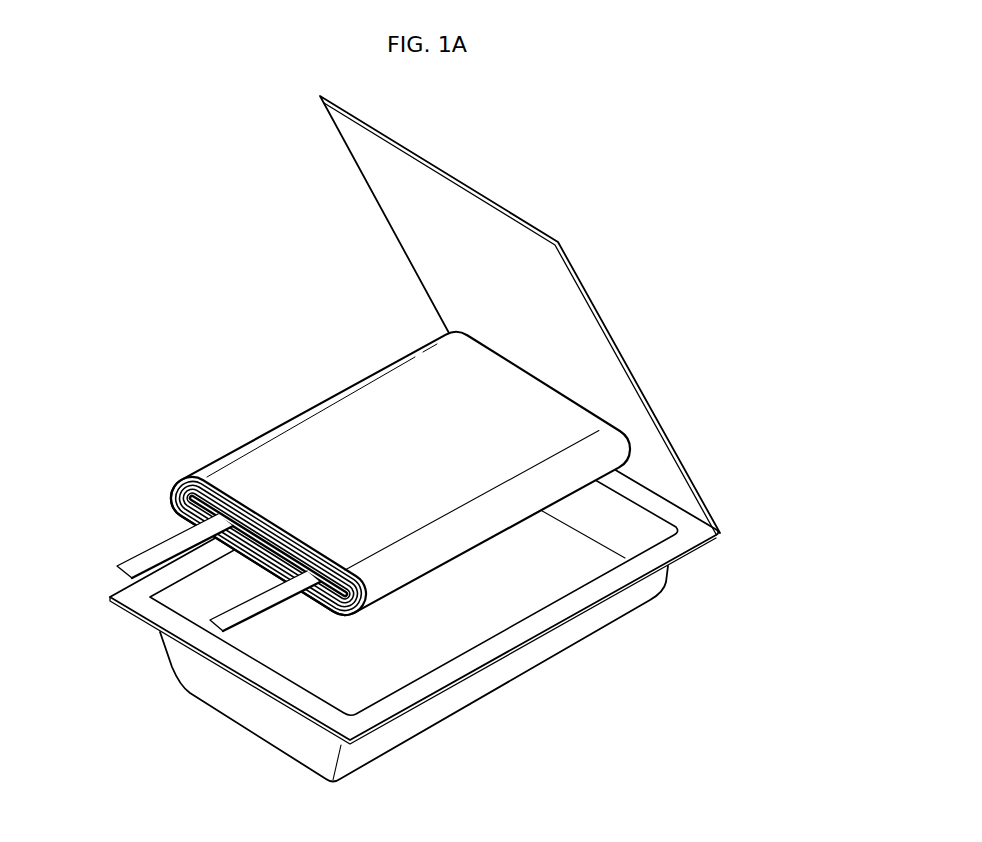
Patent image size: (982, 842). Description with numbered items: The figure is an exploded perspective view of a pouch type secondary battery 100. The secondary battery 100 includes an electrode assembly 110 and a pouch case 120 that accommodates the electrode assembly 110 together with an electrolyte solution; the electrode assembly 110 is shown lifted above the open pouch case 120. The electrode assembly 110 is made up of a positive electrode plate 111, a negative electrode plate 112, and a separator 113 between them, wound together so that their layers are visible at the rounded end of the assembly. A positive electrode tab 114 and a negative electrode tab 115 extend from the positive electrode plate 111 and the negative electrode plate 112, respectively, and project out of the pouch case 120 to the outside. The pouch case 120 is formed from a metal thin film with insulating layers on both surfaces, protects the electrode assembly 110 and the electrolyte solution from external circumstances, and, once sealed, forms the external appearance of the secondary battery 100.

The secondary battery 100 is at (432, 439).
The electrode assembly 110 is at (361, 528).
The positive electrode plate 111 is at (180, 476).
The negative electrode plate 112 is at (170, 499).
The separator 113 is at (173, 485).
The positive electrode tab 114 is at (130, 568).
The negative electrode tab 115 is at (219, 628).
The pouch case 120 is at (731, 535).